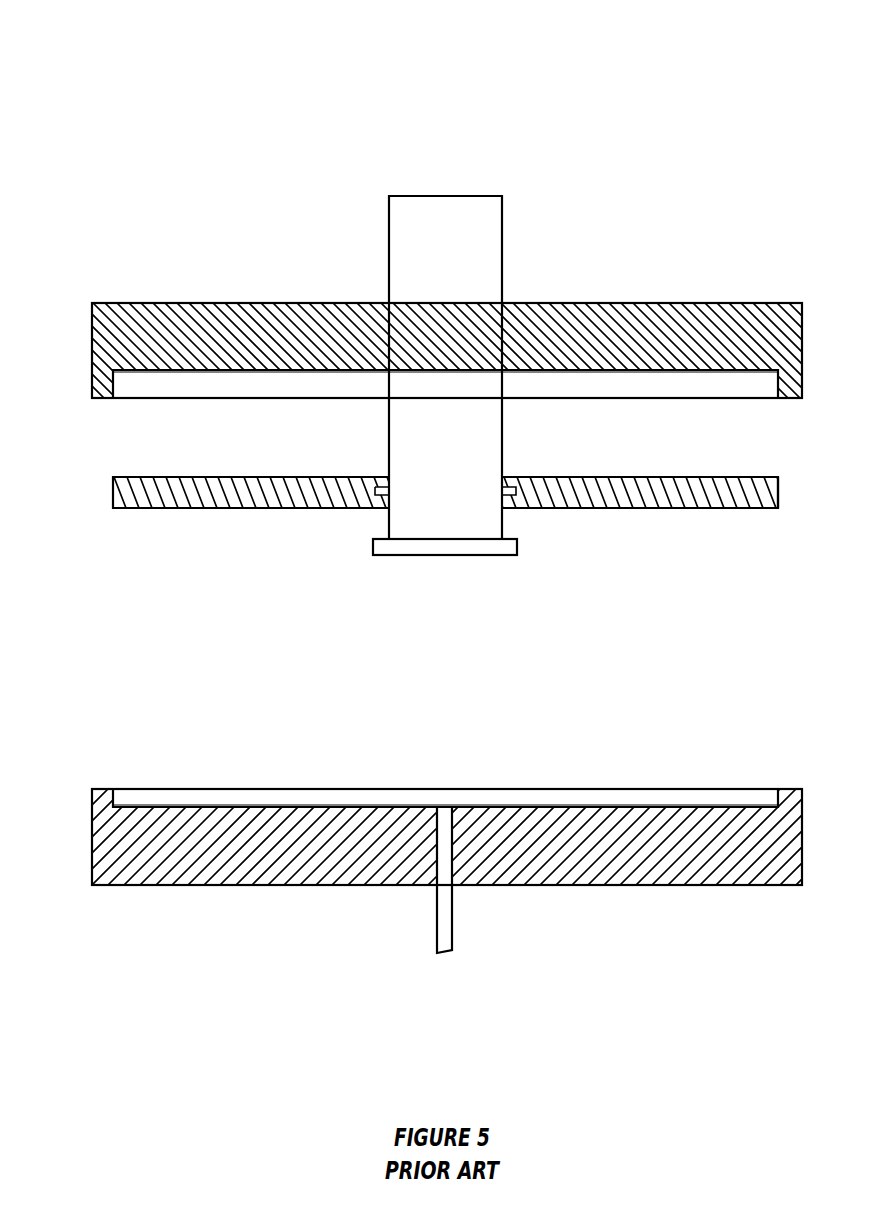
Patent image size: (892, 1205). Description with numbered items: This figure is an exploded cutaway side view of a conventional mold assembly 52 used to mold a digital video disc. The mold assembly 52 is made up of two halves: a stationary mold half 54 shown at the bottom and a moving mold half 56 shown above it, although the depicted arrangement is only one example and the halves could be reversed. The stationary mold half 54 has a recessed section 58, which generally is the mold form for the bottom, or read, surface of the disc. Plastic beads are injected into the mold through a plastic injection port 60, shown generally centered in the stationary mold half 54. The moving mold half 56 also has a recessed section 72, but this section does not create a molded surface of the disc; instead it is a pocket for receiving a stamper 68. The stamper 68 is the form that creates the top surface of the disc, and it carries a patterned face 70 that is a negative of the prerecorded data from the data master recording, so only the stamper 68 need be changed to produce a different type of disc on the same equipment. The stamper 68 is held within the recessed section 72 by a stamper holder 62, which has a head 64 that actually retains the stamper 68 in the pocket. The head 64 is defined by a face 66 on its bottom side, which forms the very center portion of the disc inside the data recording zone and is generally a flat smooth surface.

The mold assembly 52 is at (706, 152).
The stationary mold half 54 is at (651, 886).
The moving mold half 56 is at (203, 301).
The recessed section 58 is at (168, 783).
The plastic injection port 60 is at (452, 924).
The stamper holder 62 is at (503, 222).
The head 64 is at (373, 549).
The face 66 is at (445, 560).
The stamper 68 is at (779, 496).
The patterned face 70 is at (602, 516).
The recessed section 72 is at (158, 403).